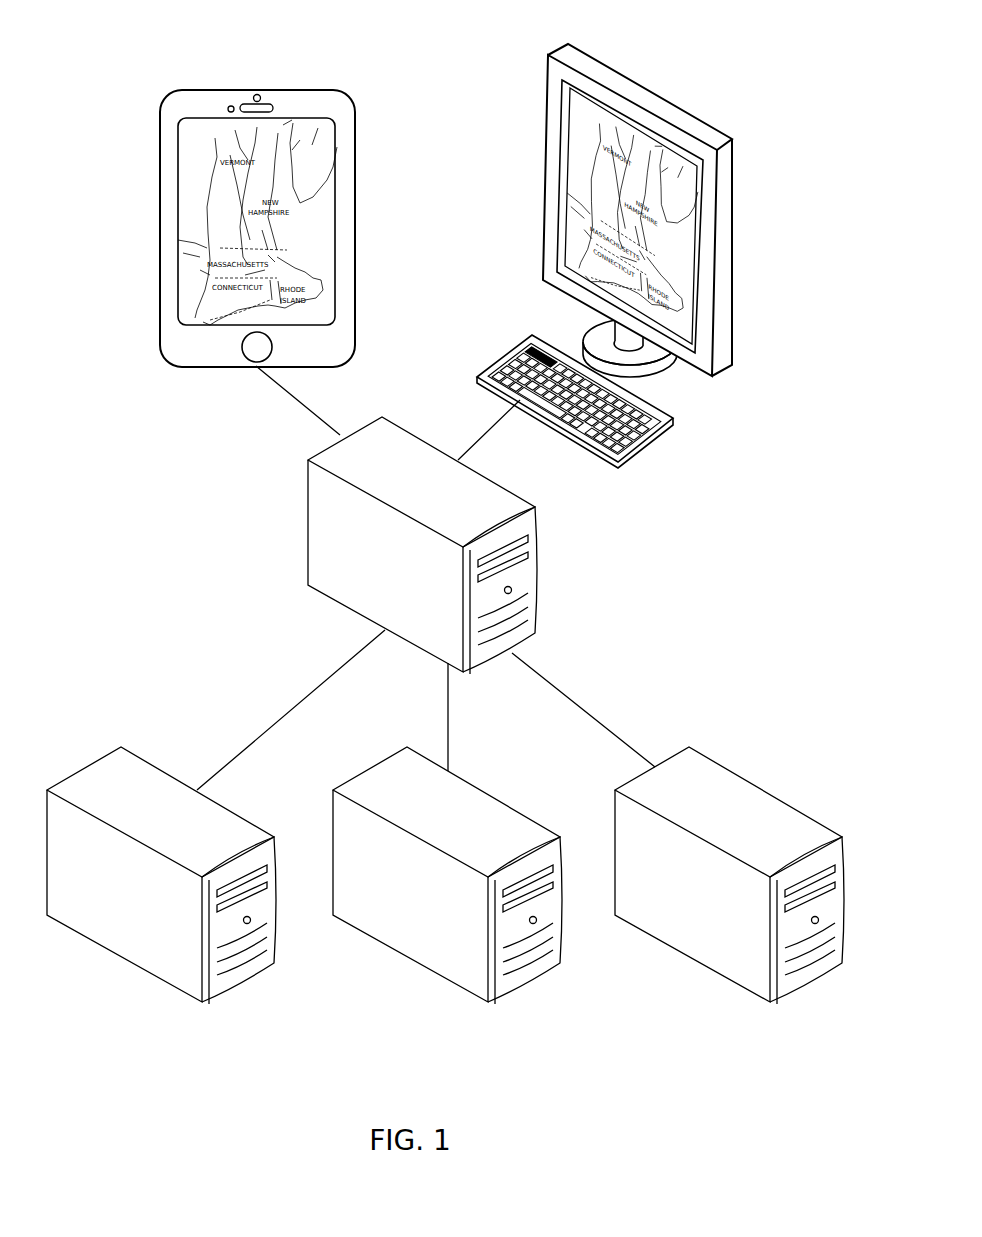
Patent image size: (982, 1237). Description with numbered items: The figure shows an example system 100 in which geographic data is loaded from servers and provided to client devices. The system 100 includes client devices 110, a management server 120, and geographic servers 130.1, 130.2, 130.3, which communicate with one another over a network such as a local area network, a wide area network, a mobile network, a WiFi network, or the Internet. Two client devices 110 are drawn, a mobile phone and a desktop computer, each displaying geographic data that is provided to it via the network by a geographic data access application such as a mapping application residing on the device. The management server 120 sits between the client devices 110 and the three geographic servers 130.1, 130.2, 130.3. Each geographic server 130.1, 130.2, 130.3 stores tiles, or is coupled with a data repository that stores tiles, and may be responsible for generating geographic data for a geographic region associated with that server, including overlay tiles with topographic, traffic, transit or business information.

The system 100 is at (163, 50).
The client device 110 is at (160, 230).
The management server 120 is at (307, 519).
The geographic server 130.1 is at (80, 770).
The geographic server 130.2 is at (367, 768).
The geographic server 130.3 is at (732, 772).